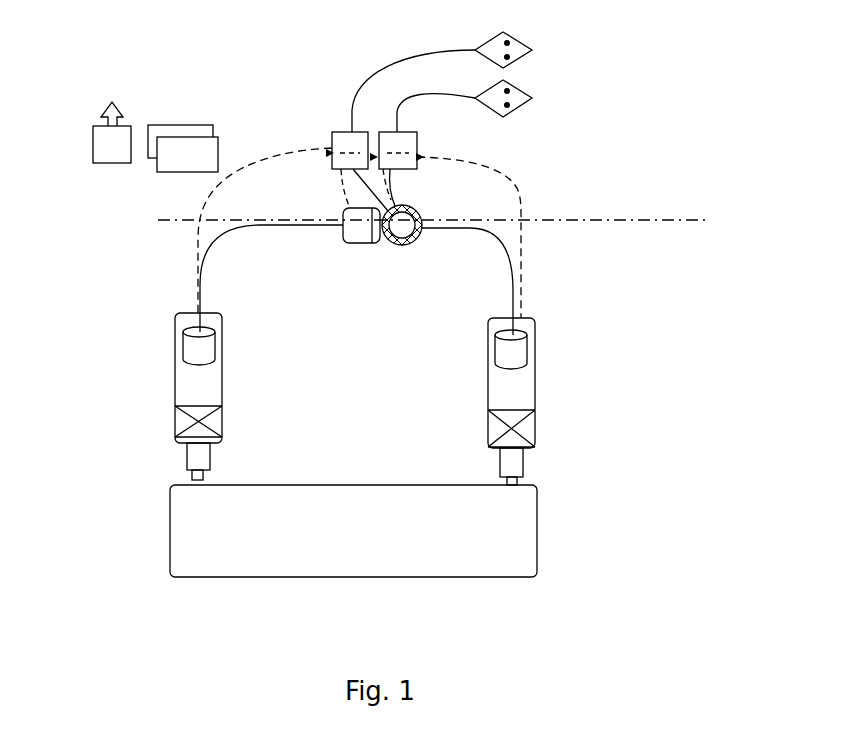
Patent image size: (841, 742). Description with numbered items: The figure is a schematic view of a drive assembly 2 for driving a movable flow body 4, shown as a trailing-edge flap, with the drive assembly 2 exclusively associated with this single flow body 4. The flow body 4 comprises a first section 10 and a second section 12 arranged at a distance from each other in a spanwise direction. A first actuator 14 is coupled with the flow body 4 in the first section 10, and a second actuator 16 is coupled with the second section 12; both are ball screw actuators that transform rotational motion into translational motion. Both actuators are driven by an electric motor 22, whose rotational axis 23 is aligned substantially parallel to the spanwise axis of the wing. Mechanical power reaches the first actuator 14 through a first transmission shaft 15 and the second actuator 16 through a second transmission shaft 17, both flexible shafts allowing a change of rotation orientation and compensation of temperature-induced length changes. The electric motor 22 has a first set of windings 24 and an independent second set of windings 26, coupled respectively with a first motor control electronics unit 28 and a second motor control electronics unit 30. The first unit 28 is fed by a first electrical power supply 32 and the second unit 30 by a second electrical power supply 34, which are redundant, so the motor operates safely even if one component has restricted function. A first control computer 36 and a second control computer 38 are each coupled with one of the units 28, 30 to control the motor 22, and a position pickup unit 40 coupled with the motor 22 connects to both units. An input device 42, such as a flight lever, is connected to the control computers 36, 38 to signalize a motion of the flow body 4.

The drive assembly 2 is at (133, 334).
The movable flow body 4 is at (537, 547).
The first section 10 is at (196, 552).
The second section 12 is at (506, 546).
The first actuator 14 is at (197, 396).
The first transmission shaft 15 is at (210, 250).
The second actuator 16 is at (558, 401).
The second transmission shaft 17 is at (510, 275).
The electric motor 22 is at (405, 247).
The rotational axis 23 is at (607, 221).
The first set of windings 24 is at (416, 211).
The second set of windings 26 is at (420, 237).
The first motor control electronics unit 28 is at (322, 152).
The second motor control electronics unit 30 is at (405, 148).
The first electrical power supply 32 is at (525, 57).
The second electrical power supply 34 is at (520, 107).
The first control computer 36 is at (218, 148).
The second control computer 38 is at (168, 125).
The position pickup unit 40 is at (355, 243).
The input device 42 is at (117, 163).